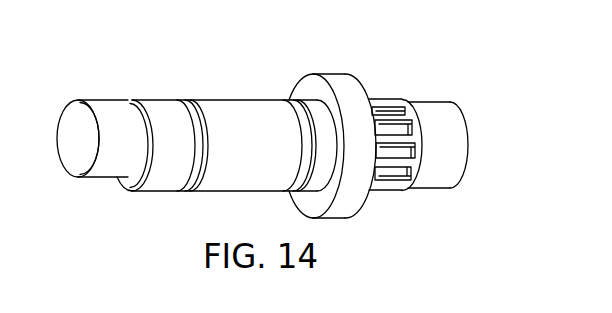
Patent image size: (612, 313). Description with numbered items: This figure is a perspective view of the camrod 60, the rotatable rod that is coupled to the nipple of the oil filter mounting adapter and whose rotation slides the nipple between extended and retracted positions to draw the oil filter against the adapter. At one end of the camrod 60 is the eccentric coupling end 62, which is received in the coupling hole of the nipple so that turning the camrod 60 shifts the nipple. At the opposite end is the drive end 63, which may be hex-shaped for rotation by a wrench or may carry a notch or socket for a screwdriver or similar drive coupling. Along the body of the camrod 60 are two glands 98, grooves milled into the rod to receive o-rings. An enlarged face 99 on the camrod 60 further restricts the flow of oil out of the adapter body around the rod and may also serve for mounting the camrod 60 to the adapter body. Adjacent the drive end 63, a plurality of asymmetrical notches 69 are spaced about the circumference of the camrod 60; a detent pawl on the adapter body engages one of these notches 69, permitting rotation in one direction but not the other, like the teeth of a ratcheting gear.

The camrod 60 is at (459, 64).
The eccentric coupling end 62 is at (80, 133).
The drive end 63 is at (434, 128).
The asymmetrical notches 69 is at (388, 106).
The glands 98 is at (192, 110).
The enlarged face 99 is at (335, 84).